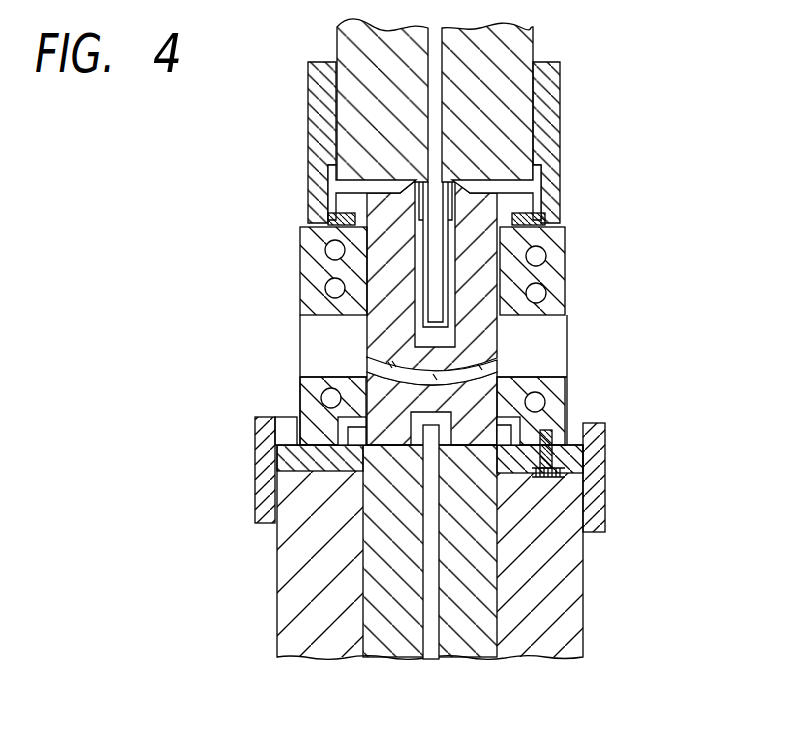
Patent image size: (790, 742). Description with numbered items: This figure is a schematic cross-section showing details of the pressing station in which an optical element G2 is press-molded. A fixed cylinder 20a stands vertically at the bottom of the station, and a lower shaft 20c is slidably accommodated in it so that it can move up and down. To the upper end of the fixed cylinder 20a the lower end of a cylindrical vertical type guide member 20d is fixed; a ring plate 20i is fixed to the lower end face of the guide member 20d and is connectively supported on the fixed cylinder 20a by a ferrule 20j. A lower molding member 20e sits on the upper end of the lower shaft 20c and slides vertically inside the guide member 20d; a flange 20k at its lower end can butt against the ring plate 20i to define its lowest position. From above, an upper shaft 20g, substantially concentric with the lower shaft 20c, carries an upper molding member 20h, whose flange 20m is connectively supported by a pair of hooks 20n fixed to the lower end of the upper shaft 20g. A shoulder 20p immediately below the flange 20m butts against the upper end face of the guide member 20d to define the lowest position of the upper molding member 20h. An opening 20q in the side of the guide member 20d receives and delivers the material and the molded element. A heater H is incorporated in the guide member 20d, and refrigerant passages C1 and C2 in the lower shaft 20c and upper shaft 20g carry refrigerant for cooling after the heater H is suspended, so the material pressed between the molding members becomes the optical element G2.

The fixed cylinder 20a is at (567, 590).
The lower shaft 20c is at (468, 632).
The ring plate 20i is at (300, 465).
The flange 20k is at (275, 437).
The ferrule 20j is at (590, 497).
The refrigerant passage C1 is at (435, 598).
The lower molding member 20e is at (480, 405).
The optical element G2 is at (500, 361).
The refrigerant passage C2 is at (432, 123).
The upper shaft 20g is at (510, 62).
The flange 20m is at (318, 213).
The hooks 20n is at (545, 202).
The shoulder 20p is at (303, 234).
The vertical type guide member 20d is at (567, 273).
The opening 20q is at (305, 346).
The upper molding member 20h is at (487, 341).
The heater H is at (302, 290).